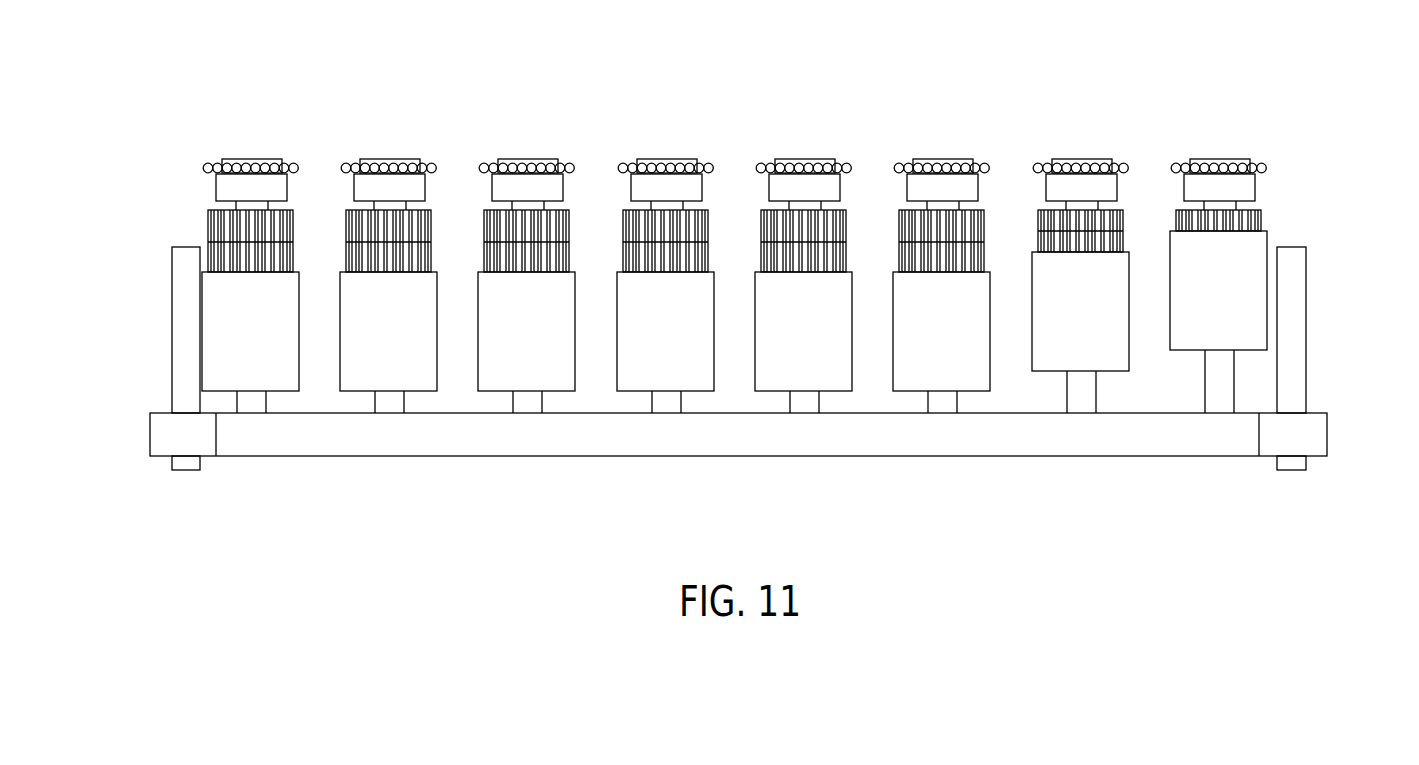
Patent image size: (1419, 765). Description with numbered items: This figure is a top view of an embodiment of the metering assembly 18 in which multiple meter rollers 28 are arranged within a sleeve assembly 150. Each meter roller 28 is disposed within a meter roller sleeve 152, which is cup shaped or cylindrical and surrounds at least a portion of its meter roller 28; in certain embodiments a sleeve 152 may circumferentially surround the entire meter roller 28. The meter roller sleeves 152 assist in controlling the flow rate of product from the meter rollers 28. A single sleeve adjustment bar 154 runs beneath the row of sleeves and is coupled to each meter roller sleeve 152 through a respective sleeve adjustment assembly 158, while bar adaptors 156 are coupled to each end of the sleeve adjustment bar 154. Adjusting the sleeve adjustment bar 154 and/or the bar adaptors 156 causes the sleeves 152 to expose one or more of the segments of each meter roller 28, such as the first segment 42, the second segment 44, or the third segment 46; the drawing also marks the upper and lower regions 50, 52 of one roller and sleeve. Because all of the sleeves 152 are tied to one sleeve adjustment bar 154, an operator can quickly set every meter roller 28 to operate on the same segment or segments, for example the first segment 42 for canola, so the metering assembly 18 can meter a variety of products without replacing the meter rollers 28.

The metering assembly 18 is at (183, 104).
The meter roller 28 is at (346, 248).
The first segment 42 is at (708, 217).
The second segment 44 is at (708, 262).
The third segment 46 is at (699, 291).
The upper portion 50 is at (623, 238).
The lower portion 52 is at (622, 264).
The sleeve assembly 150 is at (1351, 281).
The meter roller sleeve 152 is at (1240, 305).
The sleeve adjustment bar 154 is at (250, 437).
The bar adaptor 156 is at (182, 331).
The sleeve adjustment assembly 158 is at (250, 405).